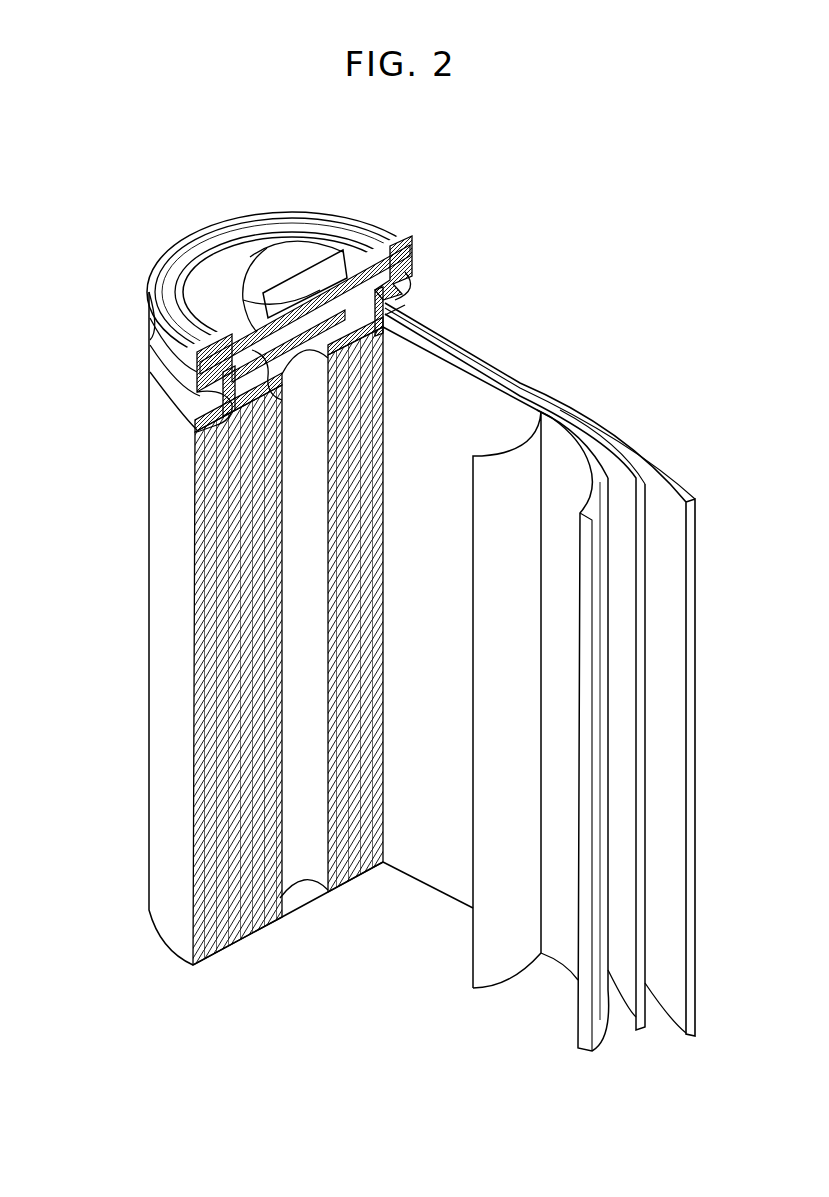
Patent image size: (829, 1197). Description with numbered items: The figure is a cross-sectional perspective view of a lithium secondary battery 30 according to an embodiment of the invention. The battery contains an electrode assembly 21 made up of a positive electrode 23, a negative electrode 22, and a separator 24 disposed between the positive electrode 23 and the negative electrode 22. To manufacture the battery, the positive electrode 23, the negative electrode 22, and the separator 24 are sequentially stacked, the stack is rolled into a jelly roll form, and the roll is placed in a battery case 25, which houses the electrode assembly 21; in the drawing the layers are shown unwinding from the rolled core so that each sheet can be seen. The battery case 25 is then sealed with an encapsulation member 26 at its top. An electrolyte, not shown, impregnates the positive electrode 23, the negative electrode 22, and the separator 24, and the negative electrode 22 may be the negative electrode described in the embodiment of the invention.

The lithium secondary battery 30 is at (366, 154).
The encapsulation member 26 is at (275, 257).
The battery case 25 is at (150, 640).
The separator 24 is at (510, 457).
The positive electrode 23 is at (596, 465).
The negative electrode 22 is at (672, 466).
The electrode assembly 21 is at (288, 641).